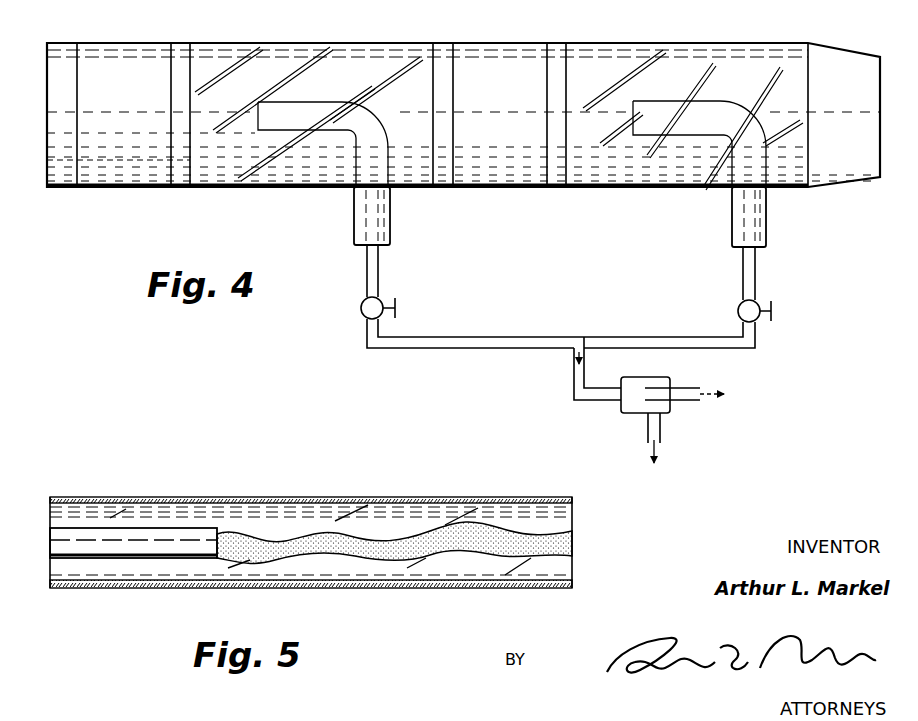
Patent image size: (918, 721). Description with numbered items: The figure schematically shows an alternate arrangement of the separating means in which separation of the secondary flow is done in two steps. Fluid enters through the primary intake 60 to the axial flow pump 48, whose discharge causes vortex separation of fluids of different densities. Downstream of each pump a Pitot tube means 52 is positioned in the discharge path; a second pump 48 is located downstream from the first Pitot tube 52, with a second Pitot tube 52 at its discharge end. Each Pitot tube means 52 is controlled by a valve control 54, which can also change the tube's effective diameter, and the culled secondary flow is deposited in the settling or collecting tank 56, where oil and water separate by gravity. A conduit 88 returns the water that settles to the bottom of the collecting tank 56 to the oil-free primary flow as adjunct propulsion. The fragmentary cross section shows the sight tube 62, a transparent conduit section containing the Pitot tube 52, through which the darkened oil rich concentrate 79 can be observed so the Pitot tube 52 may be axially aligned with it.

In FIG. 4, the axial flow pump 48 is at (145, 163).
In FIG. 4, the Pitot tube means 52 is at (340, 200).
In FIG. 5, the Pitot tube means 52 is at (148, 562).
In FIG. 4, the valve control 54 is at (357, 309).
In FIG. 4, the settling tank 56 is at (656, 377).
In FIG. 4, the primary intake 60 is at (50, 188).
In FIG. 5, the sight tube 62 is at (303, 497).
In FIG. 5, the oil rich concentrate 79 is at (356, 556).
In FIG. 4, the conduit 88 is at (663, 423).